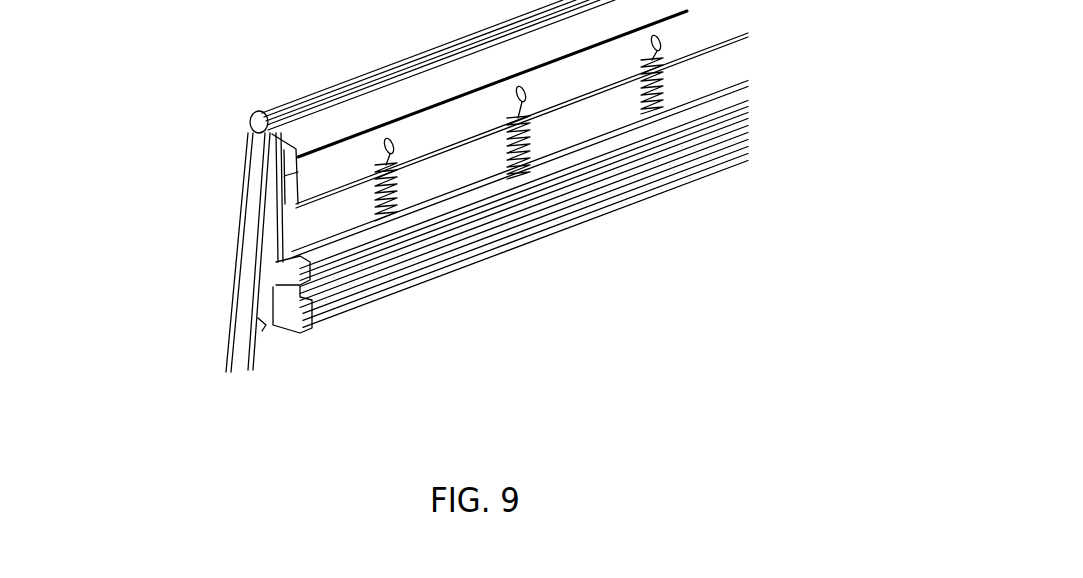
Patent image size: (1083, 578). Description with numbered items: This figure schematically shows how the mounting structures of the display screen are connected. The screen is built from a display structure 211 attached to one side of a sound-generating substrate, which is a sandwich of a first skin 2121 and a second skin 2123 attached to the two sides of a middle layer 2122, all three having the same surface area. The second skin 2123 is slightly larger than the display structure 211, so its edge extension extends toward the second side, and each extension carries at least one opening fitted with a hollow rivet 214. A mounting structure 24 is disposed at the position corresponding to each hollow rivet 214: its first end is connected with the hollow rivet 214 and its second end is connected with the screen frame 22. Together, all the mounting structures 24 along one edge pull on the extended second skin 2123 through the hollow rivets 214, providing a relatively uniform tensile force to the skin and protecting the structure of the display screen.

The display structure 211 is at (235, 300).
The first skin 2121 is at (241, 233).
The middle layer 2122 is at (260, 166).
The second skin 2123 is at (270, 152).
The hollow rivet 214 is at (657, 45).
The screen frame 22 is at (345, 302).
The mounting structure 24 is at (397, 215).